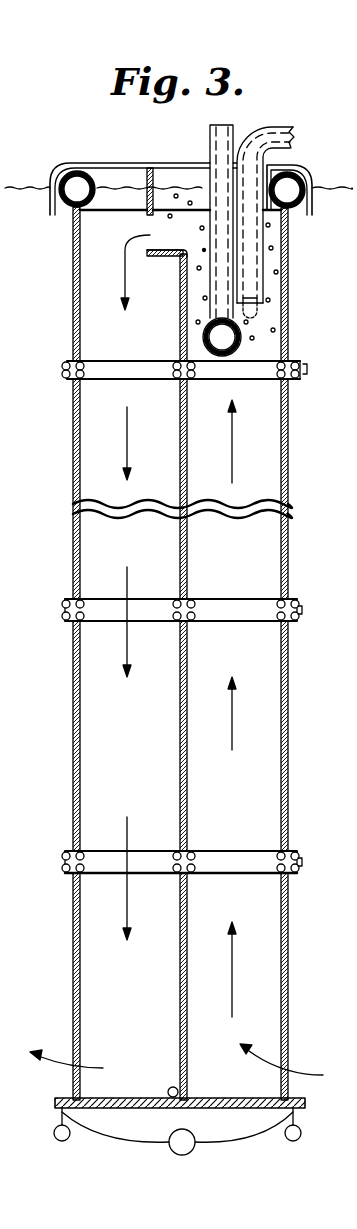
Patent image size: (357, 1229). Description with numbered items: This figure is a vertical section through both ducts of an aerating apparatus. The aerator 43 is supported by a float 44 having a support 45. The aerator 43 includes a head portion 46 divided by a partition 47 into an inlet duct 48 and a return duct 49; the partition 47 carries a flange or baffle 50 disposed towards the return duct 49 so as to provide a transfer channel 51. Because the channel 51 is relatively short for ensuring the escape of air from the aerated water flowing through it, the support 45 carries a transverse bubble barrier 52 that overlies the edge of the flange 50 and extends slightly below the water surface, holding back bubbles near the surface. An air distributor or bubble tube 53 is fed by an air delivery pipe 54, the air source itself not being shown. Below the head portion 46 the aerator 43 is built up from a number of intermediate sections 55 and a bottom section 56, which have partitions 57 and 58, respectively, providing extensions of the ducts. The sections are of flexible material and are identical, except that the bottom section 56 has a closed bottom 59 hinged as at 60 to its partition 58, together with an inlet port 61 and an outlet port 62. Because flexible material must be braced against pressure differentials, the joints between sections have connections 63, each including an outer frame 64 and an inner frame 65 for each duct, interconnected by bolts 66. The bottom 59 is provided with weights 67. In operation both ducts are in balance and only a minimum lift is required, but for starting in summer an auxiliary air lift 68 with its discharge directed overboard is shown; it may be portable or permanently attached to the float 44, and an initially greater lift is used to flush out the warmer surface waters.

The aerator 43 is at (120, 192).
The float 44 is at (72, 208).
The support 45 is at (170, 166).
The head portion 46 is at (73, 300).
The partition 47 is at (180, 330).
The inlet duct 48 is at (253, 783).
The return duct 49 is at (97, 805).
The flange or baffle 50 is at (158, 257).
The transfer channel 51 is at (160, 240).
The transverse bubble barrier 52 is at (147, 173).
The air distributor or bubble tube 53 is at (214, 358).
The air delivery pipe 54 is at (230, 133).
The intermediate sections 55 is at (72, 570).
The bottom section 56 is at (72, 980).
The partition 57 is at (180, 740).
The partition 58 is at (179, 990).
The closed bottom 59 is at (130, 1108).
The hinge 60 is at (169, 1090).
The inlet port 61 is at (293, 1063).
The outlet port 62 is at (72, 1083).
The connections 63 is at (243, 607).
The outer frame 64 is at (287, 857).
The inner frame 65 is at (157, 870).
The bolts 66 is at (191, 871).
The weights 67 is at (286, 1138).
The auxiliary air lift 68 is at (276, 128).